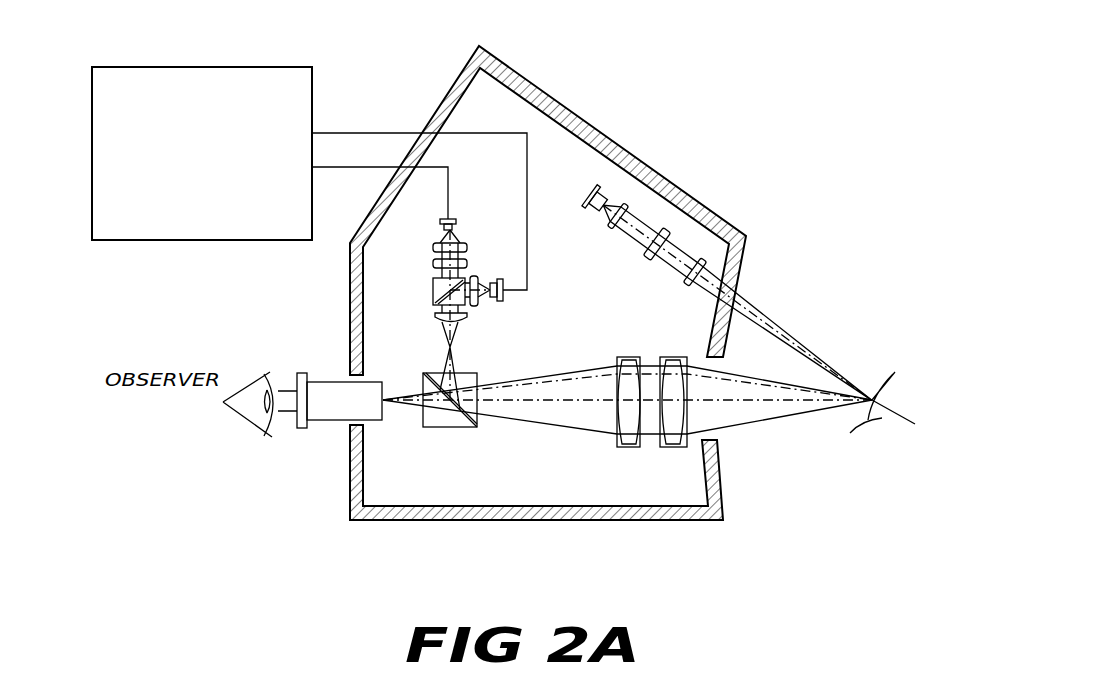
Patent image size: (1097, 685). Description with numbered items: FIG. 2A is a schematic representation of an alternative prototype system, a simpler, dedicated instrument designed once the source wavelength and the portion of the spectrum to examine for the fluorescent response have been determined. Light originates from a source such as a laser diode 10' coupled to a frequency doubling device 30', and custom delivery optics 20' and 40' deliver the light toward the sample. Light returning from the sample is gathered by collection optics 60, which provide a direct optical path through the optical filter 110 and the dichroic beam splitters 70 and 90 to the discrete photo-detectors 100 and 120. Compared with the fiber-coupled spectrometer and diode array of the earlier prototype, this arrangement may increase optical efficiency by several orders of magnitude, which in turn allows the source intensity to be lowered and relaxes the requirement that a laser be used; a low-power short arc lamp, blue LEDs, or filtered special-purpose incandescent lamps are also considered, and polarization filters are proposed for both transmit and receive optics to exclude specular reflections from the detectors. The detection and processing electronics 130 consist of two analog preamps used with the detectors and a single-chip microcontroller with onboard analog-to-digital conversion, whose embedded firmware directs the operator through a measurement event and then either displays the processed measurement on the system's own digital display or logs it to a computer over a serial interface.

The detection and processing electronics 130 is at (200, 72).
The photo-detector 120 is at (452, 219).
The optical filter 110 is at (436, 267).
The dichroic beam splitter 90 is at (433, 303).
The photo-detector 100 is at (498, 298).
The dichroic beam splitter 70 is at (462, 432).
The collection optics 60 is at (652, 448).
The laser diode 10' is at (622, 146).
The delivery optics 20' is at (651, 170).
The frequency doubling device 30' is at (686, 205).
The delivery optics 40' is at (720, 237).